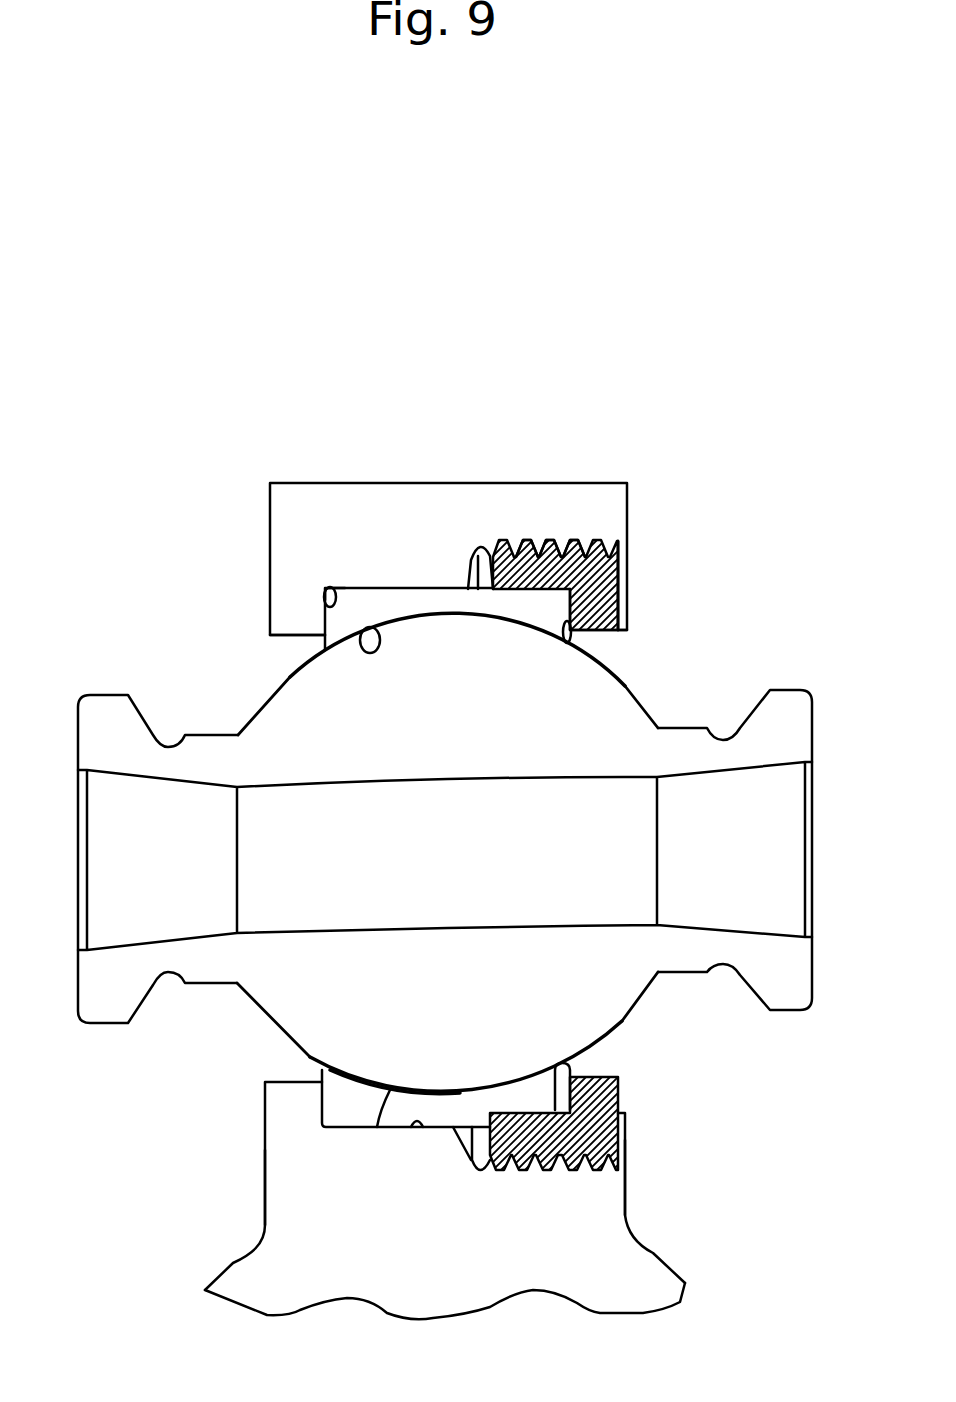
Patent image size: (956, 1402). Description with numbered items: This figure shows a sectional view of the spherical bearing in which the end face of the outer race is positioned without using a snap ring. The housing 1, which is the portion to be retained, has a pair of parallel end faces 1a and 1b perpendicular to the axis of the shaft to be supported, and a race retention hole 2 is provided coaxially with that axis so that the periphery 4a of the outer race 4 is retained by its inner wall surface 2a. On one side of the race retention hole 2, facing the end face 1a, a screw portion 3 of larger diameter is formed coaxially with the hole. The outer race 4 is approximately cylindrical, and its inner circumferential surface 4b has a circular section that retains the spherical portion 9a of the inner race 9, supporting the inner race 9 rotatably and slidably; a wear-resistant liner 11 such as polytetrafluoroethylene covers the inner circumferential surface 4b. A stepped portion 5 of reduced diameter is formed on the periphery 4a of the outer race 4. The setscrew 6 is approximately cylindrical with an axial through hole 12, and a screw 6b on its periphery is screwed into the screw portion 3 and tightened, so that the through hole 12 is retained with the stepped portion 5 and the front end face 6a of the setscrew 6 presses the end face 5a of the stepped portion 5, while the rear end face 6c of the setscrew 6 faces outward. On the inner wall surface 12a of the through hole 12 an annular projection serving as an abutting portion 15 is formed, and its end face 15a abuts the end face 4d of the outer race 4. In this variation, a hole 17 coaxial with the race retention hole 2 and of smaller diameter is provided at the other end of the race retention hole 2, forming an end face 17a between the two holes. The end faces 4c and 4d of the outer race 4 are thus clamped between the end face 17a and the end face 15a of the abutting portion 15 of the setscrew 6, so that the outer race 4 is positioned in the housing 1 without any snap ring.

The housing 1 is at (255, 1115).
The end face of housing 1a is at (628, 1183).
The end face of housing 1b is at (263, 1173).
The race retention hole 2 is at (442, 1114).
The inner wall surface of race retention hole 2a is at (413, 1127).
The screw portion 3 is at (627, 1124).
The outer race 4 is at (420, 575).
The periphery of outer race 4a is at (373, 627).
The inner circumferential surface of outer race 4b is at (327, 578).
The end face of outer race 4c is at (323, 620).
The end face of outer race 4d is at (620, 610).
The stepped portion 5 is at (550, 540).
The end face of stepped portion 5a is at (520, 540).
The setscrew 6 is at (580, 527).
The front end face of setscrew 6a is at (468, 585).
The screw 6b is at (541, 540).
The rear end face of setscrew 6c is at (620, 600).
The inner race 9 is at (792, 997).
The spherical portion 9a is at (392, 1127).
The liner 11 is at (355, 1080).
The through hole 12 is at (534, 1104).
The inner wall surface of through hole 12a is at (556, 1100).
The abutting portion 15 is at (620, 633).
The end face of abutting portion 15a is at (572, 638).
The hole 17 is at (285, 642).
The end face 17a is at (326, 590).